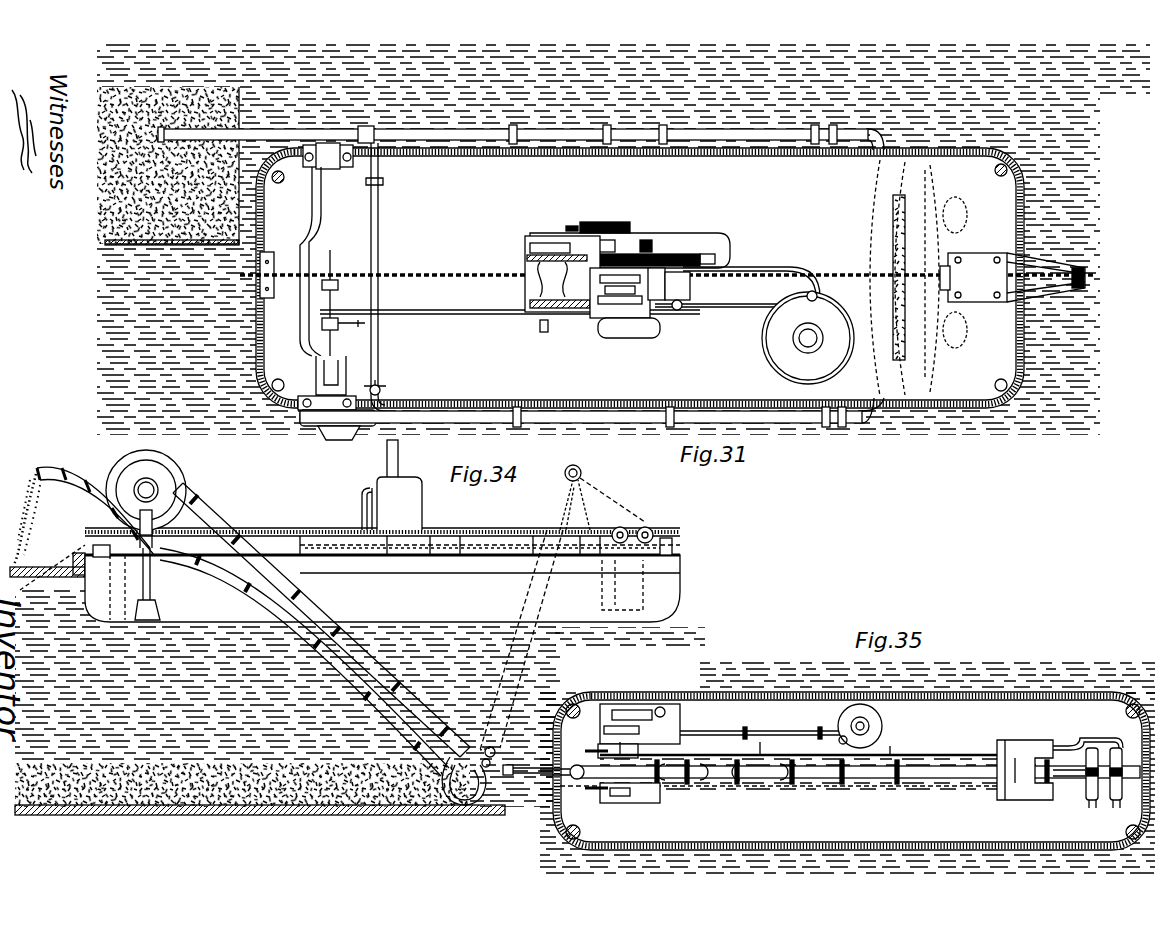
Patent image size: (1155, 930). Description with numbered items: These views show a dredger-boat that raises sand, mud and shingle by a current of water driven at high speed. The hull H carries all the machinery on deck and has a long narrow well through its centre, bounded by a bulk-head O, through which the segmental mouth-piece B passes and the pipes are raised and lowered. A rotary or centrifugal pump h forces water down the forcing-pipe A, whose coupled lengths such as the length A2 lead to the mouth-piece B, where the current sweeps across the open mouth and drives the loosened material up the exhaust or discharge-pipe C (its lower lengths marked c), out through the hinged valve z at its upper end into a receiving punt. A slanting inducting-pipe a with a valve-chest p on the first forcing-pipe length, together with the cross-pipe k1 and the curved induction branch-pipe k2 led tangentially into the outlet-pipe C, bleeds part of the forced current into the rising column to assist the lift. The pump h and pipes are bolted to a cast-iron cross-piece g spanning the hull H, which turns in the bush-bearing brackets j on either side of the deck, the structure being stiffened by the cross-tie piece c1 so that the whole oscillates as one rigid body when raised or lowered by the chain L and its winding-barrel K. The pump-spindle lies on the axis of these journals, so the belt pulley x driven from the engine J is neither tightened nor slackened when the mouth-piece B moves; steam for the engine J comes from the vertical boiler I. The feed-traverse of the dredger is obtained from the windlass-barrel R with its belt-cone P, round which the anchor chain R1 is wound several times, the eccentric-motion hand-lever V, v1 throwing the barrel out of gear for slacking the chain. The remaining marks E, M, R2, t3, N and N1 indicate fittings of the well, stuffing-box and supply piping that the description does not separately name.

In FIG. 31, the exhaust or discharge pipe C is at (521, 130).
In FIG. 31, the hull H is at (640, 278).
In FIG. 34, the hull H is at (382, 575).
In FIG. 35, the hull H is at (851, 771).
In FIG. 31, the rotary (centrifugal) pump h is at (378, 260).
In FIG. 34, the rotary (centrifugal) pump h is at (146, 493).
In FIG. 31, the induction curved branch-pipe k2 is at (383, 387).
In FIG. 31, the cross-piece g is at (326, 242).
In FIG. 31, the pulley x is at (344, 303).
In FIG. 31, the bush-bearing bracket (standard) j is at (339, 398).
In FIG. 31, the forcing-pipe A is at (592, 418).
In FIG. 31, the winding-barrel K is at (667, 265).
In FIG. 35, the winding-barrel K is at (800, 766).
In FIG. 31, the chain R1 is at (510, 284).
In FIG. 31, the eccentric-motion hand-lever V is at (637, 236).
In FIG. 31, the valve chest v' v1 is at (558, 271).
In FIG. 31, the steam-engine cylinder (engine) J is at (680, 306).
In FIG. 35, the steam-engine cylinder (engine) J is at (627, 746).
In FIG. 31, the vertical steam-boiler I is at (808, 337).
In FIG. 34, the vertical steam-boiler I is at (392, 485).
In FIG. 35, the vertical steam-boiler I is at (826, 725).
In FIG. 31, the bulkhead E is at (887, 278).
In FIG. 31, the mouth-piece B is at (930, 278).
In FIG. 31, the hinged valve z is at (955, 272).
In FIG. 31, the stuffing box / pulley M is at (1010, 279).
In FIG. 34, the stuffing box / pulley M is at (577, 493).
In FIG. 34, the shore wall R' R2 is at (47, 567).
In FIG. 34, the bulk-head O is at (109, 582).
In FIG. 34, the support pipe t3 is at (149, 584).
In FIG. 34, the cross-tie piece c1 is at (84, 508).
In FIG. 34, the slanting inducting-pipe a is at (300, 607).
In FIG. 34, the discharge-pipe c is at (304, 662).
In FIG. 34, the valve-chest p is at (501, 767).
In FIG. 34, the chain L is at (562, 614).
In FIG. 34, the cross-pipe k1 is at (635, 532).
In FIG. 34, the well N is at (618, 585).
In FIG. 34, the winding-barrel (windlass-barrel) R is at (390, 541).
In FIG. 35, the forcing-pipe length A2 is at (840, 773).
In FIG. 35, the belt-cone P is at (1041, 762).
In FIG. 35, the valves N N' N1 is at (1096, 766).